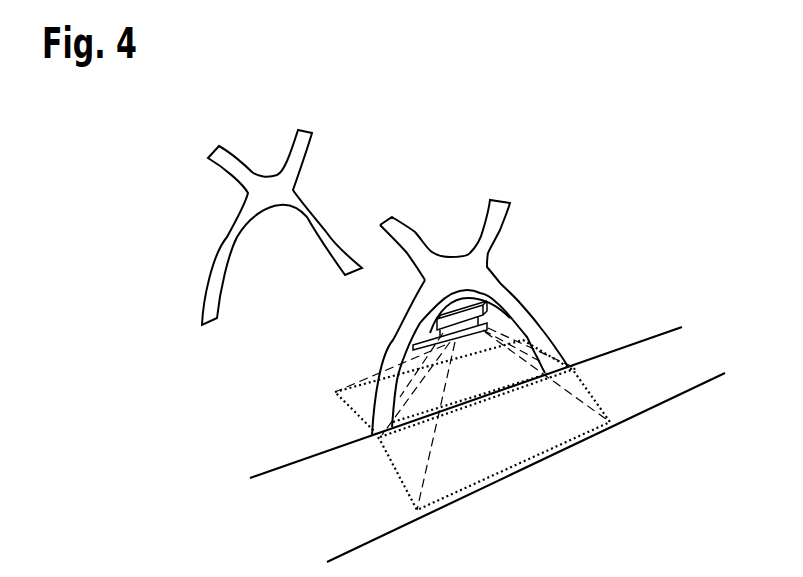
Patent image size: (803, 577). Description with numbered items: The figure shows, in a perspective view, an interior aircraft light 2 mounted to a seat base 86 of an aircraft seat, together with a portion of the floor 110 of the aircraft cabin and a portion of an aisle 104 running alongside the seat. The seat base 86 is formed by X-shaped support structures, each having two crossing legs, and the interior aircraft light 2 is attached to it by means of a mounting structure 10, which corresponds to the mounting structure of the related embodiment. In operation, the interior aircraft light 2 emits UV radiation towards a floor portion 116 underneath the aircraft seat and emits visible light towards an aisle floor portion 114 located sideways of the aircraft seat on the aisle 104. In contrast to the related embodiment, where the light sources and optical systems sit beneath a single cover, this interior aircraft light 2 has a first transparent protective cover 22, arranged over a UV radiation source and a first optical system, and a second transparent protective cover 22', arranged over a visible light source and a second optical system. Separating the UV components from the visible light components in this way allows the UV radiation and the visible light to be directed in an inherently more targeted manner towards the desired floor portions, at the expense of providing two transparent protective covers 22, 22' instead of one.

The interior aircraft light 2 is at (510, 262).
The mounting structure 10 is at (500, 300).
The first transparent protective cover 22 is at (414, 335).
The second transparent protective cover 22' is at (414, 309).
The seat base 86 is at (233, 163).
The aisle 104 is at (692, 367).
The floor 110 is at (218, 389).
The aisle floor portion 114 is at (500, 452).
The floor portion 116 is at (360, 406).